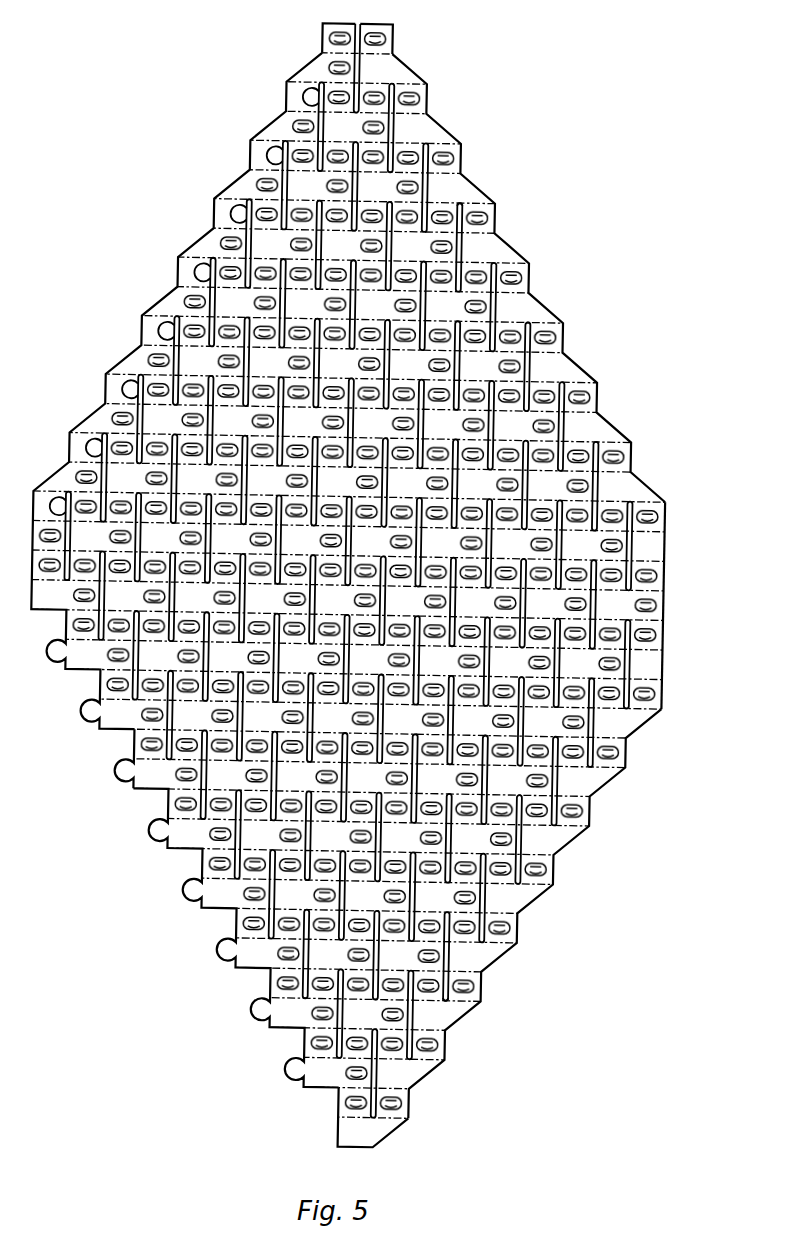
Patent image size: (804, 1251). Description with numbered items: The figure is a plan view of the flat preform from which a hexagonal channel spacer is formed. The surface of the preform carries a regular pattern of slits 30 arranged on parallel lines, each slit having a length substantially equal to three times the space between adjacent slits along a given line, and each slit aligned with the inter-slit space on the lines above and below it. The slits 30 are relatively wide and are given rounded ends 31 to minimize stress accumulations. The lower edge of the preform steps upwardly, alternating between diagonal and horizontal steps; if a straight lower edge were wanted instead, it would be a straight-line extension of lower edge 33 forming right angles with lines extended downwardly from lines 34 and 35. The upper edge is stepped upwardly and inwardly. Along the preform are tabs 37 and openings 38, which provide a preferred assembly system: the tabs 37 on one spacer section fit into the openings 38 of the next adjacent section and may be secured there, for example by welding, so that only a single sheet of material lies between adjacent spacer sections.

The slits 30 is at (456, 243).
The rounded ends 31 is at (456, 203).
The lower edge 33 is at (665, 558).
The line 34 is at (360, 1148).
The line 35 is at (370, 24).
The tabs 37 is at (118, 778).
The openings 38 is at (259, 159).